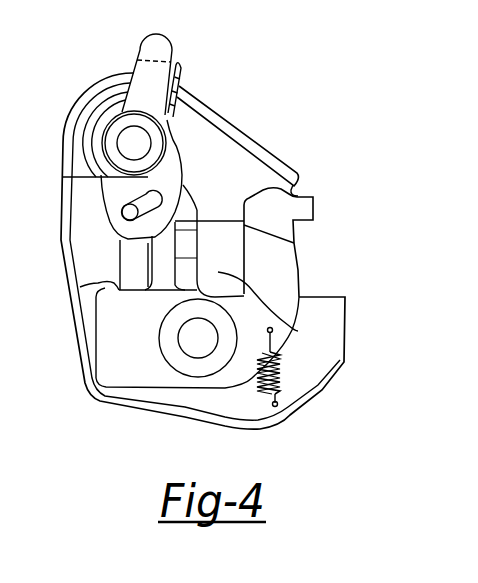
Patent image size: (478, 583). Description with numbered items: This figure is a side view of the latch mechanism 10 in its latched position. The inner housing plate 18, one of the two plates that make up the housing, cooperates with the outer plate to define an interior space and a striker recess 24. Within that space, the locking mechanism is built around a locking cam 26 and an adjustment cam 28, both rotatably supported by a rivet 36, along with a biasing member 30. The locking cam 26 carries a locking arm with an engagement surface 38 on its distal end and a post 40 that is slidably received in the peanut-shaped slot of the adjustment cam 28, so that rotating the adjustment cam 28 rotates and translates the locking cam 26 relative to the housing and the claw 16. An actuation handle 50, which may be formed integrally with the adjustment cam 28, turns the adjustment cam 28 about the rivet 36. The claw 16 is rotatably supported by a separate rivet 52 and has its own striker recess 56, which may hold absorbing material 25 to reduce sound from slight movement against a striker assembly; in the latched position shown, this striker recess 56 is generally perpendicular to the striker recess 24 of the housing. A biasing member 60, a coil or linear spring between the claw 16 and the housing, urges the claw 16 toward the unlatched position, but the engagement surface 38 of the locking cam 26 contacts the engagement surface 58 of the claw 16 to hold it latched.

The latch mechanism 10 is at (290, 52).
The claw 16 is at (302, 254).
The inner housing plate 18 is at (272, 145).
The striker recess 24 is at (323, 270).
The absorbing material 25 is at (186, 237).
The locking cam 26 is at (129, 265).
The adjustment cam 28 is at (103, 227).
The biasing member 30 is at (183, 92).
The rivet 36 is at (122, 126).
The engagement surface 38 is at (145, 288).
The post 40 is at (130, 213).
The actuation handle 50 is at (157, 50).
The rivet 52 is at (180, 369).
The striker recess 56 is at (298, 331).
The engagement surface 58 is at (80, 287).
The biasing member 60 is at (281, 380).